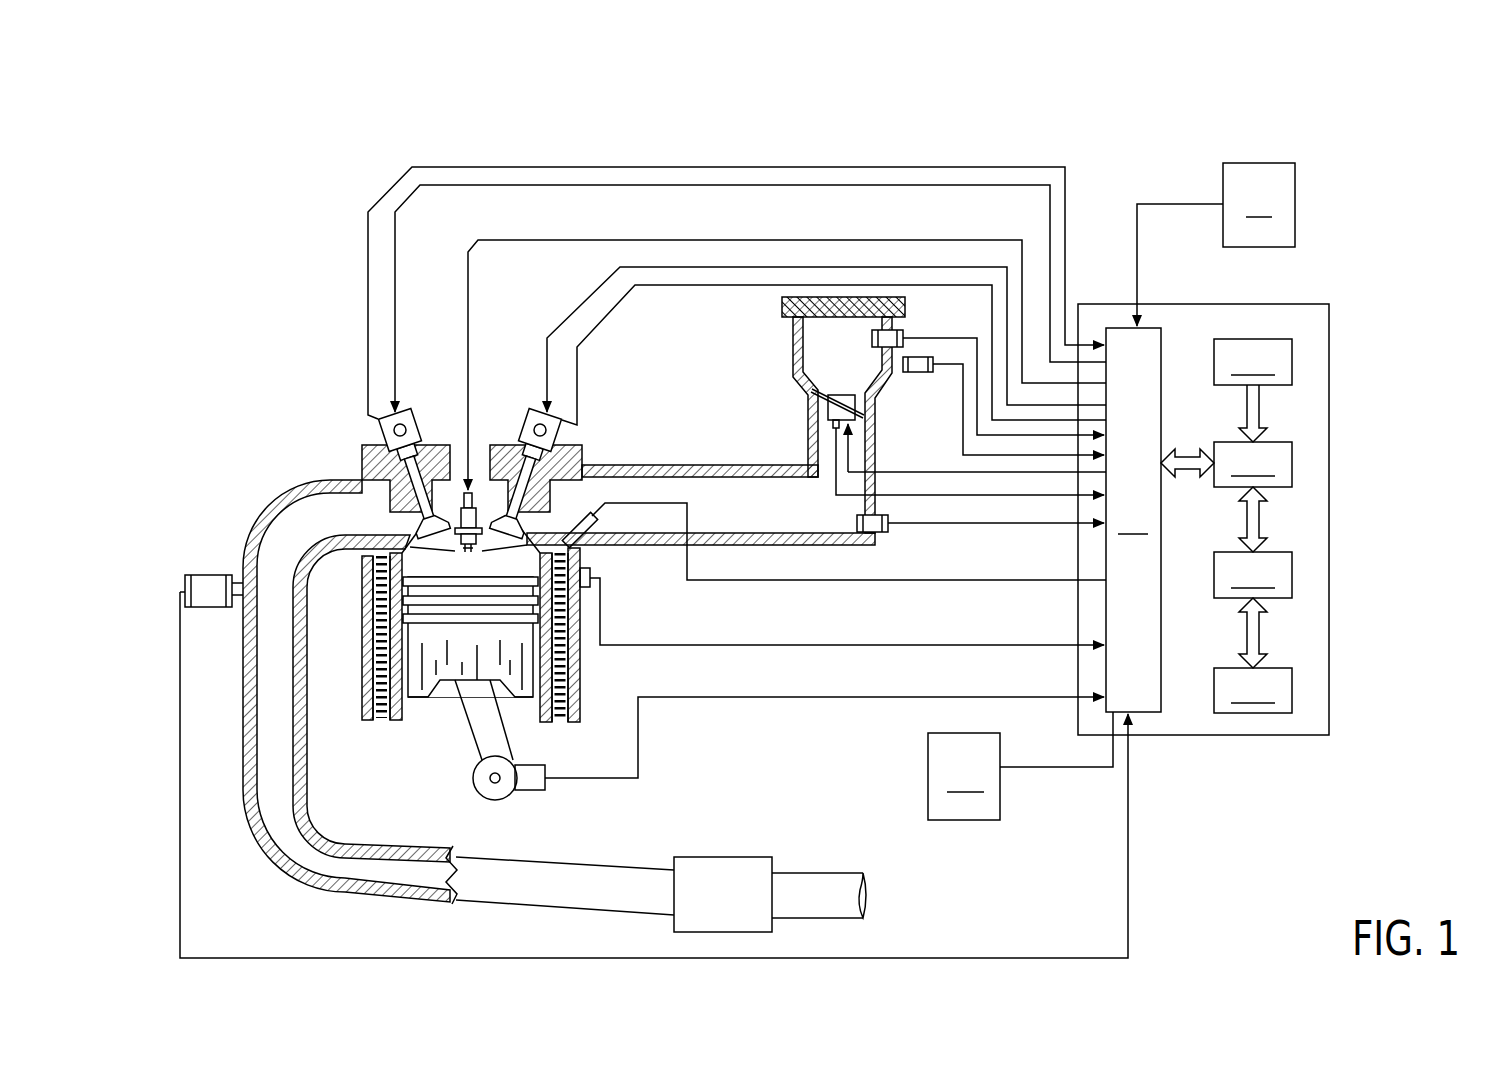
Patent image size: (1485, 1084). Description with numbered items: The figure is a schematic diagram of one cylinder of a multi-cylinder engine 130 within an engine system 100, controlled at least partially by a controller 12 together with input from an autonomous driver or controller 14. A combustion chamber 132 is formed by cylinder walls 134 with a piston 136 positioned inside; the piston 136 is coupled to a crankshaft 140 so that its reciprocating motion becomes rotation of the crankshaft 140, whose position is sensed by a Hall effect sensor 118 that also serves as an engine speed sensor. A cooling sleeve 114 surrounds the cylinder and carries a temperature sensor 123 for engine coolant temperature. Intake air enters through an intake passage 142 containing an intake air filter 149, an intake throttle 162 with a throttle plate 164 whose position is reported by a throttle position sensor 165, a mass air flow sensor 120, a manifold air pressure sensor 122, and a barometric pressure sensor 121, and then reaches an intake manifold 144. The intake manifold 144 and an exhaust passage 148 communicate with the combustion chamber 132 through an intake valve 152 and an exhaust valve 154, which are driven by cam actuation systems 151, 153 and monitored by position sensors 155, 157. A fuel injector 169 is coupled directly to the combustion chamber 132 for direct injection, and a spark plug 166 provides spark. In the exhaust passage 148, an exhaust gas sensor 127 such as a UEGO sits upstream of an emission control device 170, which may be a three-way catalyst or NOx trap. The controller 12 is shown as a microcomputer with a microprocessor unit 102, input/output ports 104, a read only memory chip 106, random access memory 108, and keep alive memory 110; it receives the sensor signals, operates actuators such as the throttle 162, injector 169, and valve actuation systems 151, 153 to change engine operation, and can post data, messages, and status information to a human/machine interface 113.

The engine system 100 is at (1370, 87).
The controller 12 is at (1320, 306).
The autonomous driver or controller 14 is at (1216, 244).
The microprocessor unit 102 is at (1295, 465).
The input/output ports 104 is at (1165, 346).
The read only memory chip 106 is at (1295, 362).
The random access memory 108 is at (1295, 582).
The keep alive memory 110 is at (1295, 692).
The human/machine interface 113 is at (1020, 766).
The cooling sleeve 114 is at (562, 720).
The Hall effect sensor 118 is at (535, 791).
The mass air flow sensor 120 is at (896, 330).
The barometric pressure sensor 121 is at (918, 373).
The manifold air pressure sensor 122 is at (883, 536).
The temperature sensor 123 is at (591, 586).
The exhaust gas sensor 127 is at (185, 580).
The engine 130 is at (290, 391).
The combustion chamber 132 is at (440, 560).
The cylinder walls 134 is at (402, 722).
The piston 136 is at (450, 665).
The crankshaft 140 is at (481, 796).
The intake passage 142 is at (860, 367).
The intake manifold 144 is at (768, 515).
The exhaust passage 148 is at (343, 529).
The intake air filter 149 is at (786, 312).
The cam actuation system 151 is at (540, 412).
The intake valve 152 is at (586, 519).
The cam actuation system 153 is at (404, 412).
The exhaust valve 154 is at (425, 535).
The position sensor 155 is at (560, 428).
The position sensor 157 is at (382, 426).
The intake throttle 162 is at (842, 413).
The throttle plate 164 is at (816, 396).
The throttle position sensor 165 is at (832, 425).
The spark plug 166 is at (472, 478).
The fuel injector 169 is at (586, 551).
The emission control device 170 is at (770, 894).